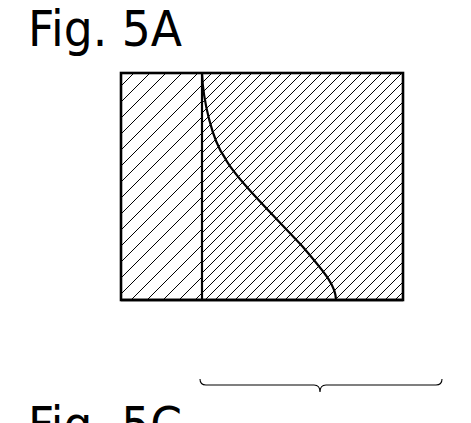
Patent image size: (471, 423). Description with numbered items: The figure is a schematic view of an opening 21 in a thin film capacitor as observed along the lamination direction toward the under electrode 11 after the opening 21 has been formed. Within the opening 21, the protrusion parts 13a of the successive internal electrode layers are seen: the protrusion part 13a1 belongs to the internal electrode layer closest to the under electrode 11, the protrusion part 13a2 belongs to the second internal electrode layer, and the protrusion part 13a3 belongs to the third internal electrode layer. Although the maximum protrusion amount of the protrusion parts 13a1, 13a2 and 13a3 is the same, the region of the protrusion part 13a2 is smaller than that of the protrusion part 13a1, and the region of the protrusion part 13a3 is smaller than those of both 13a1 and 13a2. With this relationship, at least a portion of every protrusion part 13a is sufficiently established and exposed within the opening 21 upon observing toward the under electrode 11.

The opening 21 is at (123, 128).
The under electrode 11 is at (143, 283).
The protrusion part of the first internal electrode layer 13a1 is at (202, 230).
The protrusion part of the second internal electrode layer 13a2 is at (267, 268).
The protrusion part of the third internal electrode layer 13a3 is at (362, 275).
The protrusion part 13a is at (321, 401).